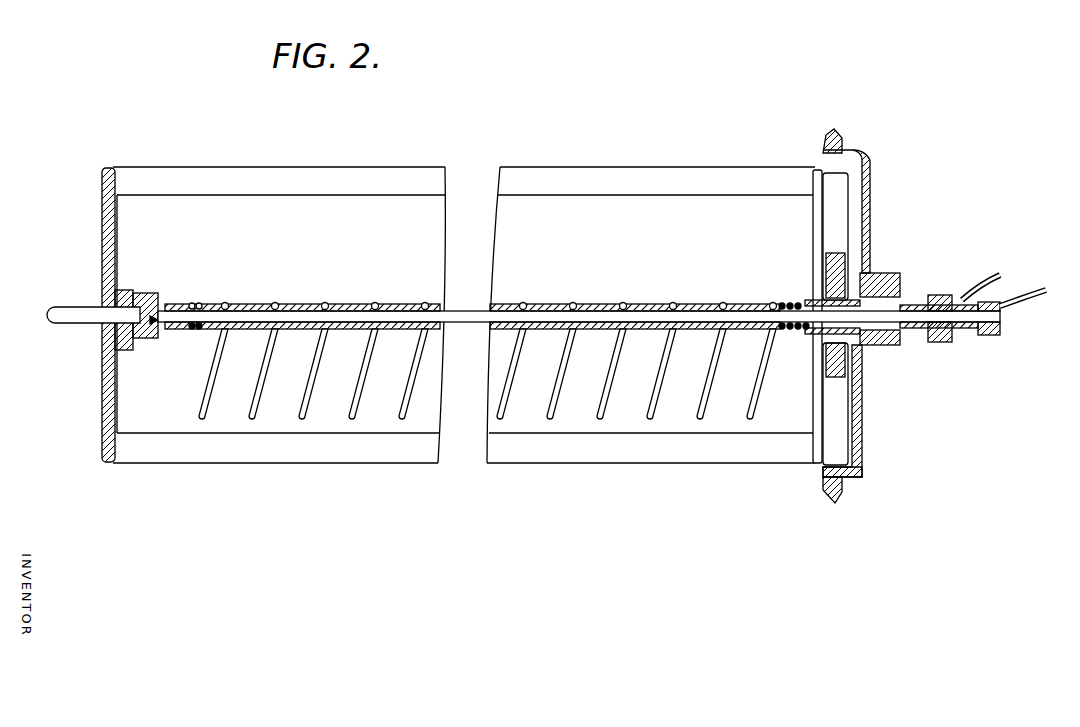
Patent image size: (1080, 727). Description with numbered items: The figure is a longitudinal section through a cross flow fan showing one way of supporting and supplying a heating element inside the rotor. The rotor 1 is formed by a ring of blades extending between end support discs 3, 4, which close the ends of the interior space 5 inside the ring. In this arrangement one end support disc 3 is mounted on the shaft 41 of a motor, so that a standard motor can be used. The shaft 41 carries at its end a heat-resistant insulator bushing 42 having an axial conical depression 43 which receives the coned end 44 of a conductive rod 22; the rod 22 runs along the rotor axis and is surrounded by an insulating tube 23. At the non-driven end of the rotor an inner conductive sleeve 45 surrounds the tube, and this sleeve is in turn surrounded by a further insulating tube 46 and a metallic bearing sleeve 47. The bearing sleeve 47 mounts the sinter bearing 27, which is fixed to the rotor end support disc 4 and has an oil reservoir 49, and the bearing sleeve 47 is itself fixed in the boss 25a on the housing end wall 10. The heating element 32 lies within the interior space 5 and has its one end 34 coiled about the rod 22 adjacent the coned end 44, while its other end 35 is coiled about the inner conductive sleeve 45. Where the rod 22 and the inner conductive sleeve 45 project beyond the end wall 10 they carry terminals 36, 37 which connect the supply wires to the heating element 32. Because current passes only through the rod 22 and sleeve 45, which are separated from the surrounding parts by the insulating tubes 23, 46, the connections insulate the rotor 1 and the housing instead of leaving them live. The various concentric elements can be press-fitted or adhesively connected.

The rotor 1 is at (598, 173).
The end support disc 3 is at (101, 204).
The end support disc 4 is at (866, 168).
The interior space 5 is at (569, 261).
The housing end wall 10 is at (822, 147).
The conductive rod 22 is at (172, 313).
The insulating tube 23 is at (300, 303).
The boss 25a is at (880, 340).
The sinter bearing 27 is at (825, 300).
The heating element 32 is at (250, 416).
The end of heating element 34 is at (197, 302).
The end of heating element 35 is at (790, 332).
The terminal 36 is at (1017, 282).
The terminal 37 is at (940, 294).
The shaft 41 is at (68, 300).
The insulator bushing 42 is at (150, 292).
The conical depression 43 is at (155, 322).
The coned end 44 is at (145, 338).
The inner conductive sleeve 45 is at (777, 302).
The insulating tube 46 is at (910, 340).
The bearing sleeve 47 is at (900, 292).
The oil reservoir 49 is at (842, 252).